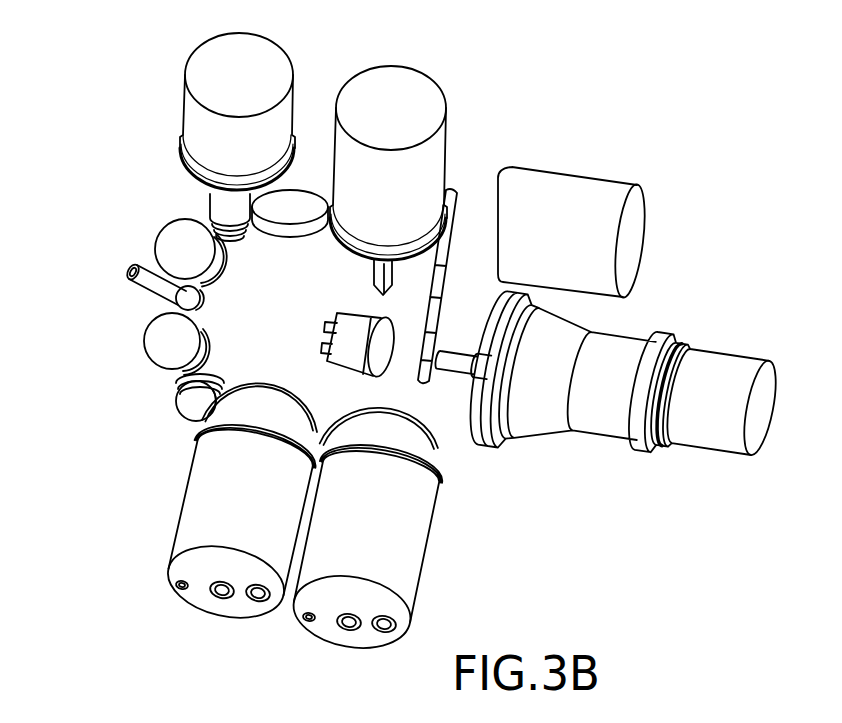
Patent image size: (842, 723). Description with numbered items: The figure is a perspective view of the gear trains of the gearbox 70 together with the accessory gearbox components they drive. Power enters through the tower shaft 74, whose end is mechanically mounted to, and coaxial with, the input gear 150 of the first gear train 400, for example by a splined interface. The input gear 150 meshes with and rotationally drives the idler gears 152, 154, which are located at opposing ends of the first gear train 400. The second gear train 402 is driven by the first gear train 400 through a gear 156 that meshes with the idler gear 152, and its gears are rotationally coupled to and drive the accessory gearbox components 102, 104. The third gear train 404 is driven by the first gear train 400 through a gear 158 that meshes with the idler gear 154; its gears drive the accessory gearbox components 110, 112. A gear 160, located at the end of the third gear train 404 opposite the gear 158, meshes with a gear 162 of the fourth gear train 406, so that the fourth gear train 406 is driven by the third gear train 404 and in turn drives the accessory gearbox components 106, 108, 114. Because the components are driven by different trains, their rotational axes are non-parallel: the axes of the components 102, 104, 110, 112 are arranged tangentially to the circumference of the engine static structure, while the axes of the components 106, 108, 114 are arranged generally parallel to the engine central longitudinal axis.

The gearbox 70 is at (419, 336).
The tower shaft 74 is at (138, 266).
The accessory gearbox component 102 is at (180, 571).
The accessory gearbox component 104 is at (333, 633).
The accessory gearbox component 106 is at (717, 440).
The accessory gearbox component 108 is at (558, 192).
The accessory gearbox component 110 is at (393, 93).
The accessory gearbox component 112 is at (218, 68).
The accessory gearbox component 114 is at (348, 343).
The input gear 150 is at (293, 351).
The idler gear 152 is at (167, 348).
The idler gear 154 is at (180, 248).
The gear 156 is at (160, 378).
The gear 158 is at (246, 237).
The gear 160 is at (347, 262).
The gear 162 is at (443, 250).
The first gear train 400 is at (169, 395).
The second gear train 402 is at (437, 460).
The third gear train 404 is at (210, 209).
The fourth gear train 406 is at (458, 331).